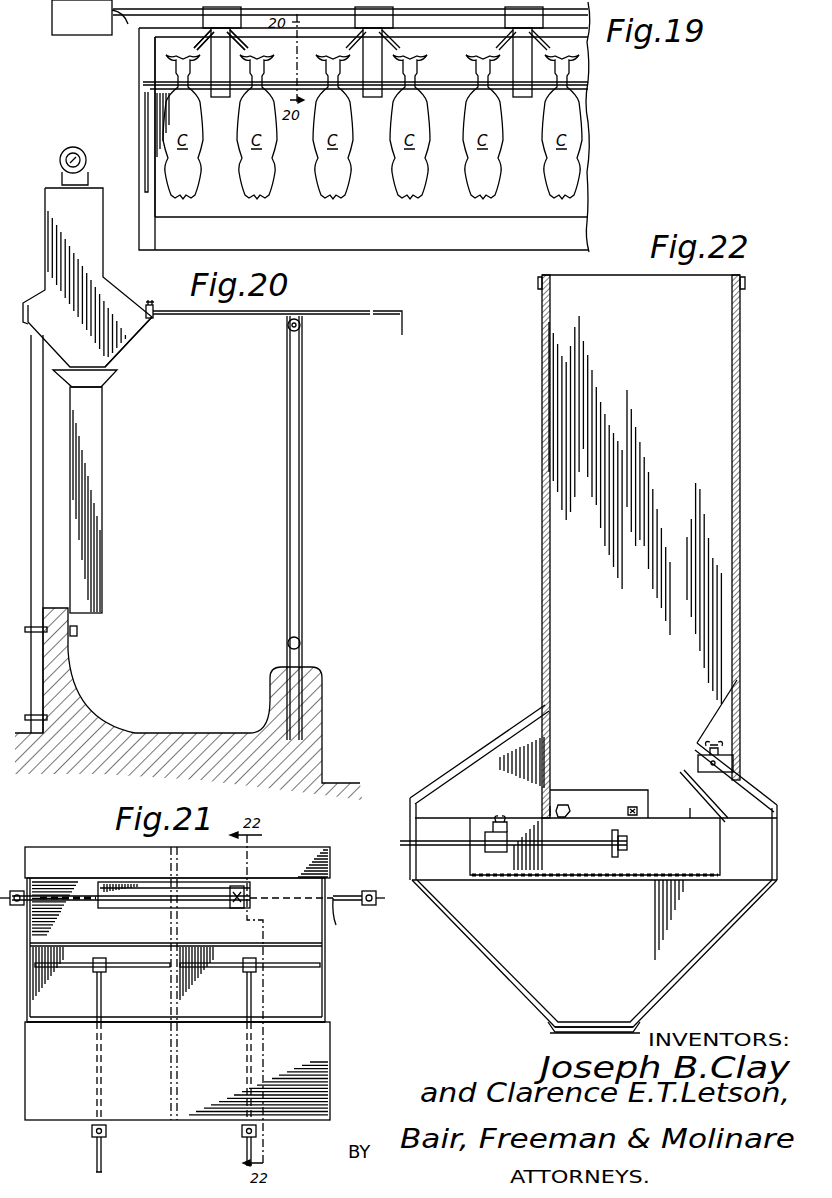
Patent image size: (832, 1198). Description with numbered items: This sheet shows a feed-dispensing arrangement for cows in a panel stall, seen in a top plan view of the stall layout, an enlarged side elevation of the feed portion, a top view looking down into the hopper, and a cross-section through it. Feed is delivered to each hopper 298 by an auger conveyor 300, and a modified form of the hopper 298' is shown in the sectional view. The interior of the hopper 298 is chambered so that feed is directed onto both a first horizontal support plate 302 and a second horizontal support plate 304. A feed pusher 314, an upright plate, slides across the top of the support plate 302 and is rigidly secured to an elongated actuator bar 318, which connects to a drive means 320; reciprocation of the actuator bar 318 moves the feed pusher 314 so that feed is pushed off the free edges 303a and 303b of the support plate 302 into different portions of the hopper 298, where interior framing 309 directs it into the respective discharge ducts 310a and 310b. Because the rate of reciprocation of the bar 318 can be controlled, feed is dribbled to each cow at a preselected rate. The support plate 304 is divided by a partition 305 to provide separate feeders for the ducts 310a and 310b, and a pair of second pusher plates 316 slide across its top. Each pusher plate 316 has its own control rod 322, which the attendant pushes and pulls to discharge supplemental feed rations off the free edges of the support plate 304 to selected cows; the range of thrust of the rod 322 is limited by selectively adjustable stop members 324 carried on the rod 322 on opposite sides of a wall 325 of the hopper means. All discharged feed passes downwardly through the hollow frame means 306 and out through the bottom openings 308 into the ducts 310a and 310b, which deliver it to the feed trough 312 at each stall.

In FIG. 19, the hopper 298 is at (355, 52).
In FIG. 20, the hopper 298 is at (87, 277).
In FIG. 22, the modified chute 298' is at (614, 546).
In FIG. 20, the auger conveyor 300 is at (96, 139).
In FIG. 22, the first horizontal support plate 302 is at (716, 776).
In FIG. 21, the first horizontal support plate 302 is at (170, 882).
In FIG. 21, the free edge of support plate 303a is at (100, 894).
In FIG. 21, the free edge of support plate 303b is at (252, 892).
In FIG. 22, the second horizontal support plate 304 is at (592, 876).
In FIG. 21, the second horizontal support plate 304 is at (302, 998).
In FIG. 22, the partition 305 is at (712, 849).
In FIG. 21, the partition 305 is at (175, 999).
In FIG. 20, the hollow frame means 306 is at (128, 342).
In FIG. 22, the hollow frame means 306 is at (705, 958).
In FIG. 20, the bottom openings 308 is at (99, 374).
In FIG. 22, the bottom openings 308 is at (591, 1032).
In FIG. 22, the interior framing 309 is at (492, 938).
In FIG. 21, the interior framing 309 is at (171, 1058).
In FIG. 19, the discharge duct 310a is at (198, 47).
In FIG. 20, the discharge duct 310a is at (96, 472).
In FIG. 21, the discharge duct 310a is at (120, 1096).
In FIG. 19, the discharge duct 310b is at (251, 43).
In FIG. 22, the discharge duct 310b is at (530, 968).
In FIG. 21, the discharge duct 310b is at (305, 1046).
In FIG. 19, the feed trough 312 is at (158, 60).
In FIG. 20, the feed trough 312 is at (194, 733).
In FIG. 22, the feed pusher 314 is at (730, 754).
In FIG. 21, the feed pusher 314 is at (237, 885).
In FIG. 22, the second pusher plate 316 is at (622, 857).
In FIG. 21, the second pusher plate 316 is at (118, 968).
In FIG. 19, the actuator bar 318 is at (127, 24).
In FIG. 22, the actuator bar 318 is at (724, 758).
In FIG. 21, the actuator bar 318 is at (334, 904).
In FIG. 19, the drive means 320 is at (78, 36).
In FIG. 20, the control rod 322 is at (327, 312).
In FIG. 22, the control rod 322 is at (548, 841).
In FIG. 21, the control rod 322 is at (97, 1159).
In FIG. 20, the stop members 324 is at (152, 318).
In FIG. 22, the stop members 324 is at (406, 846).
In FIG. 21, the stop members 324 is at (92, 1131).
In FIG. 22, the wall 325 is at (485, 845).